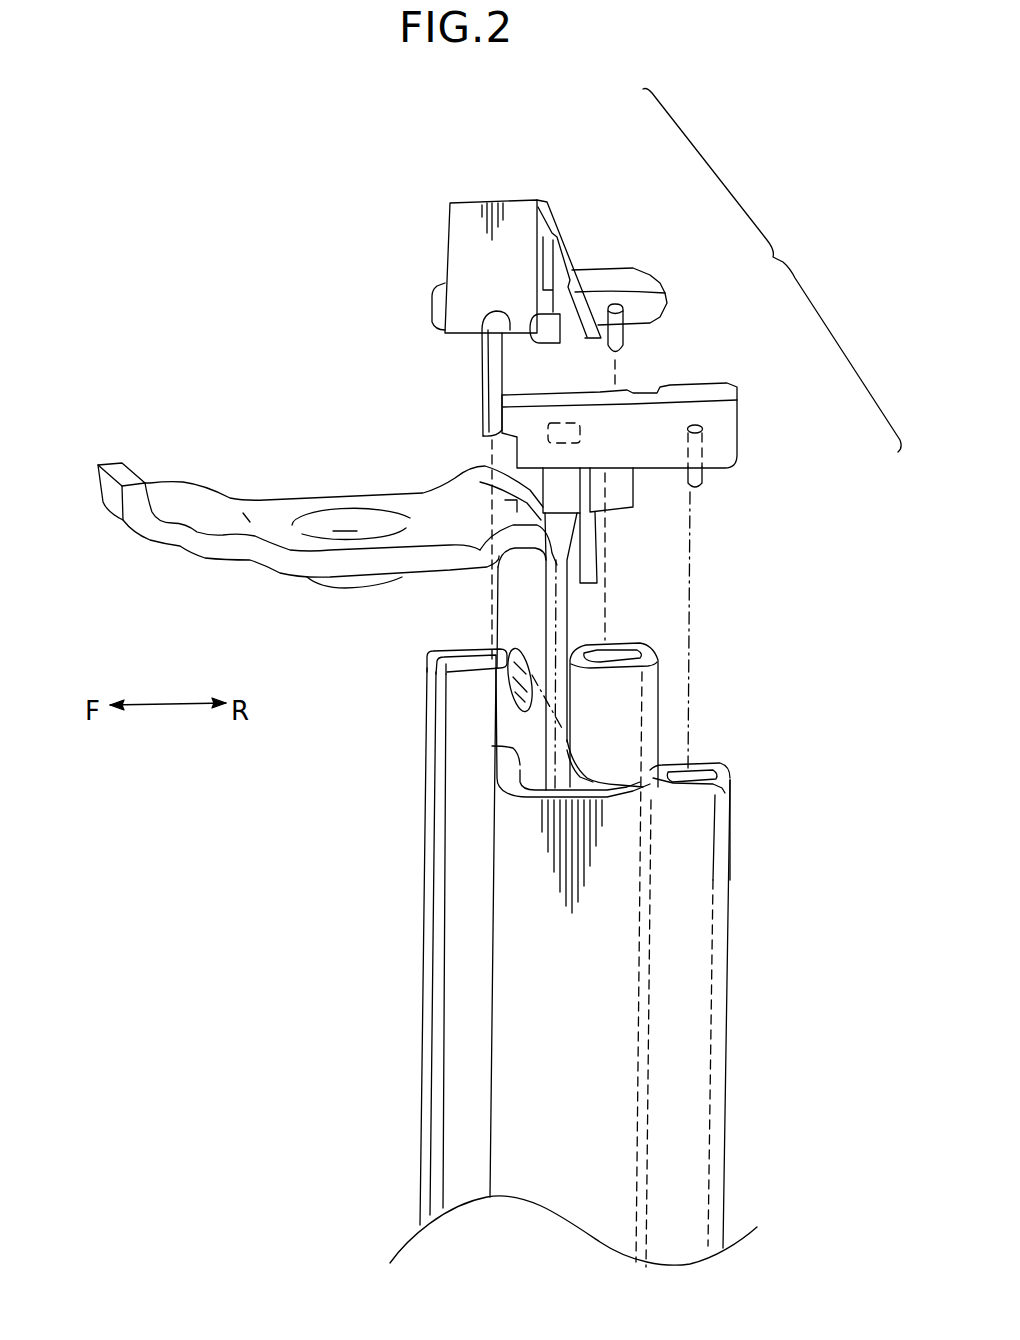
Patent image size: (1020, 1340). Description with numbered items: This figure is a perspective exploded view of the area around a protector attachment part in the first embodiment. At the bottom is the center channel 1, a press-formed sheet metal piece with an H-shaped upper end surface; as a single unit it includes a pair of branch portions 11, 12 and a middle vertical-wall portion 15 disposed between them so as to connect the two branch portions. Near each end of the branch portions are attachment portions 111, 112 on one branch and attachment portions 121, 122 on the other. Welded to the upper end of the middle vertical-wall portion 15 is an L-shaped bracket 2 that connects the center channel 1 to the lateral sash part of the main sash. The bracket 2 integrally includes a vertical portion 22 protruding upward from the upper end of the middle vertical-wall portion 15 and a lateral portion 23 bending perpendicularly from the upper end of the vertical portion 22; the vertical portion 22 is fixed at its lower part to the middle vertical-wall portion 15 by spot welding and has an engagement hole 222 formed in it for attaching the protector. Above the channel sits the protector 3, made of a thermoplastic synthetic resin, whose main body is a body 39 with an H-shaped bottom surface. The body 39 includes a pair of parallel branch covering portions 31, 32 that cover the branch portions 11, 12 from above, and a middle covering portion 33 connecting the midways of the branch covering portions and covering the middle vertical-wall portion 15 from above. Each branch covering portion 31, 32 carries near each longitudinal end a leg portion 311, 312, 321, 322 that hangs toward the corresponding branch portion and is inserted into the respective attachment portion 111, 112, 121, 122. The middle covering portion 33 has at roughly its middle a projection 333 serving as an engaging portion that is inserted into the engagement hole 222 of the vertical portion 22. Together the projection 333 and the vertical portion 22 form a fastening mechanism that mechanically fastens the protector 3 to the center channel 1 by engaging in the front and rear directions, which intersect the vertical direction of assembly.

The center channel 1 is at (408, 1003).
The branch portion 11 is at (620, 643).
The attachment portion 111 is at (653, 652).
The attachment portion 112 is at (463, 668).
The branch portion 12 is at (677, 797).
The attachment portion 121 is at (707, 765).
The attachment portion 122 is at (500, 748).
The middle vertical-wall portion 15 is at (587, 777).
The L-shaped bracket 2 is at (270, 491).
The vertical portion 22 is at (518, 598).
The engagement hole 222 is at (517, 648).
The lateral portion 23 is at (185, 500).
The protector 3 is at (401, 316).
The branch covering portion 31 is at (623, 277).
The leg portion 311 is at (622, 344).
The leg portion 312 is at (493, 385).
The branch covering portion 32 is at (724, 442).
The leg portion 321 is at (702, 481).
The leg portion 322 is at (545, 492).
The middle covering portion 33 is at (558, 230).
The projection 333 is at (526, 321).
The body 39 is at (772, 271).